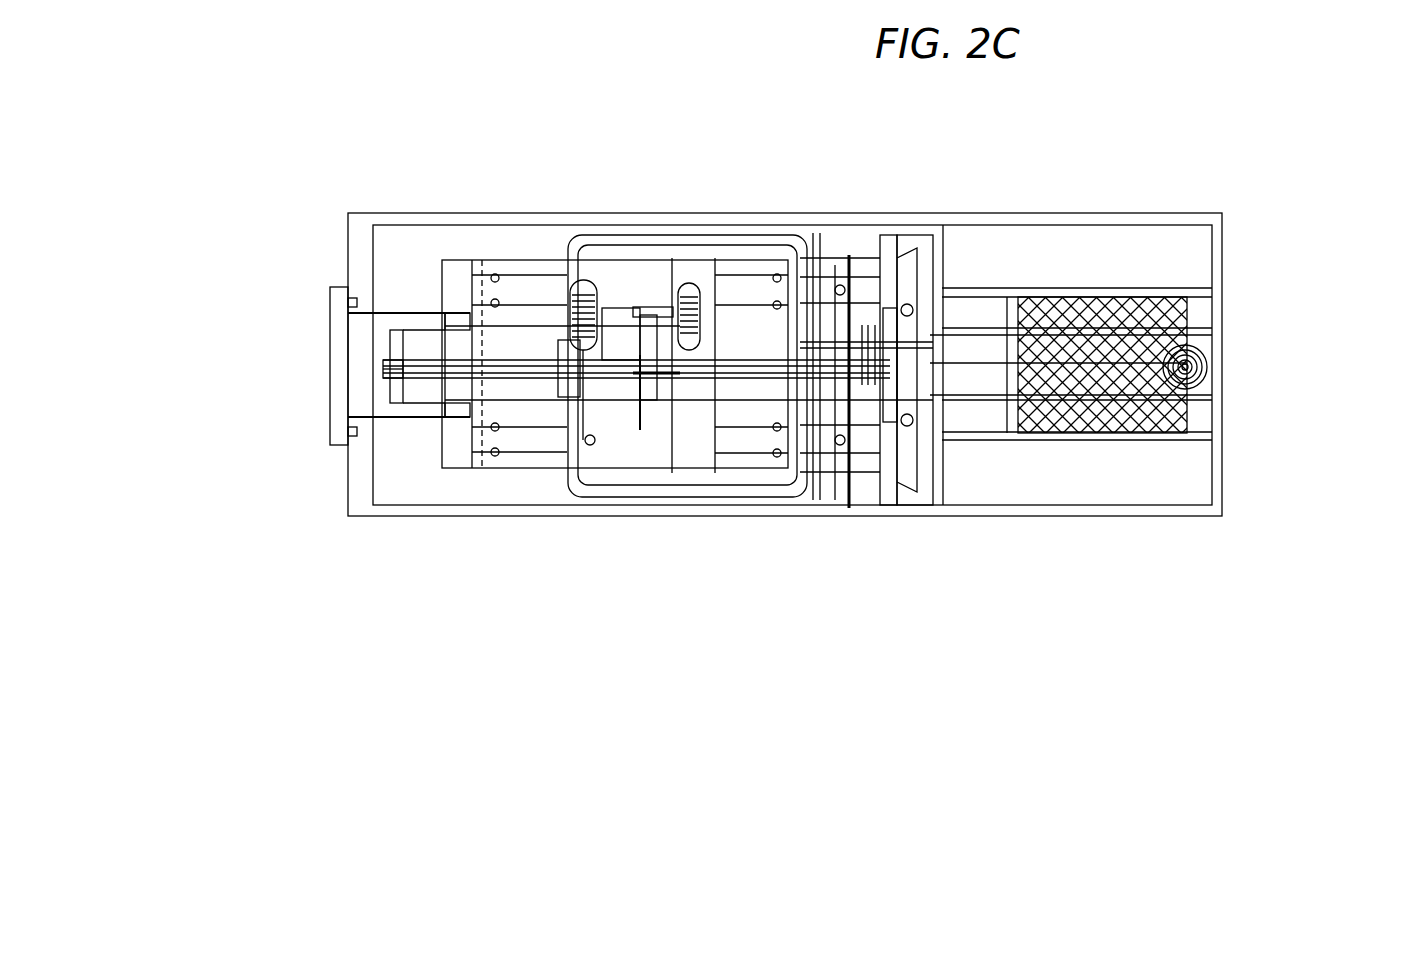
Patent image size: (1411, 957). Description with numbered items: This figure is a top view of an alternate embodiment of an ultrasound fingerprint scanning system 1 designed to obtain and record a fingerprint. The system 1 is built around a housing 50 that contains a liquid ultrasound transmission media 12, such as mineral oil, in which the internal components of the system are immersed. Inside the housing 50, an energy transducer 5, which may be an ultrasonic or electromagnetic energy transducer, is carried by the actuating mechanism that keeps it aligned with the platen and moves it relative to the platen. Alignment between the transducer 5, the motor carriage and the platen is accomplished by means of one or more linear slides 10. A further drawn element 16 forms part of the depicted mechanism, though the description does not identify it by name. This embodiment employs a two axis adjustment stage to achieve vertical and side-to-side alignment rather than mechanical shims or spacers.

The system 1 is at (1103, 167).
The housing 50 is at (653, 214).
The liquid ultrasound transmission media 12 is at (398, 444).
The linear slide 10 is at (517, 440).
The plate assembly 16 is at (915, 465).
The energy transducer 5 is at (1205, 375).